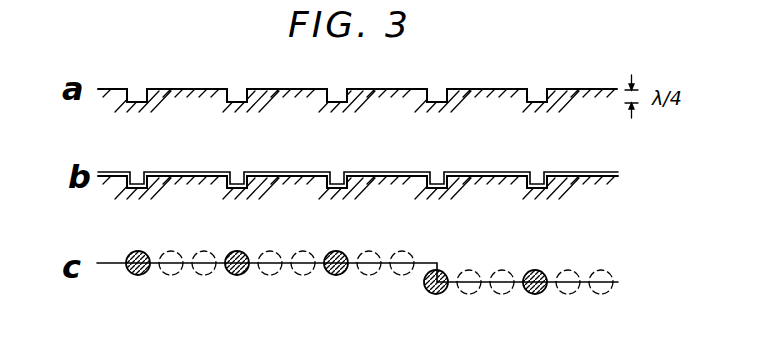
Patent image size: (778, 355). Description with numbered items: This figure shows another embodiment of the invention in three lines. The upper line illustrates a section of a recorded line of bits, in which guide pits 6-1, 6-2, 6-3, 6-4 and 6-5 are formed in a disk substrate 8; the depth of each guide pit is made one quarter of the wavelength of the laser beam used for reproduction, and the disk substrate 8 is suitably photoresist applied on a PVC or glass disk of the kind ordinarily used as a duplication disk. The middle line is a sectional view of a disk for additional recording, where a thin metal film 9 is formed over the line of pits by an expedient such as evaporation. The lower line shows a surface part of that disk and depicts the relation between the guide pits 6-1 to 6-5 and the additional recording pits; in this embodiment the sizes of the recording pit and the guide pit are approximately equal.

The guide pit 6-1 is at (129, 90).
The guide pit 6-2 is at (229, 90).
The guide pit 6-3 is at (329, 90).
The guide pit 6-4 is at (429, 90).
The guide pit 6-5 is at (529, 90).
The disk substrate 8 is at (588, 99).
The thin metal film 9 is at (597, 172).